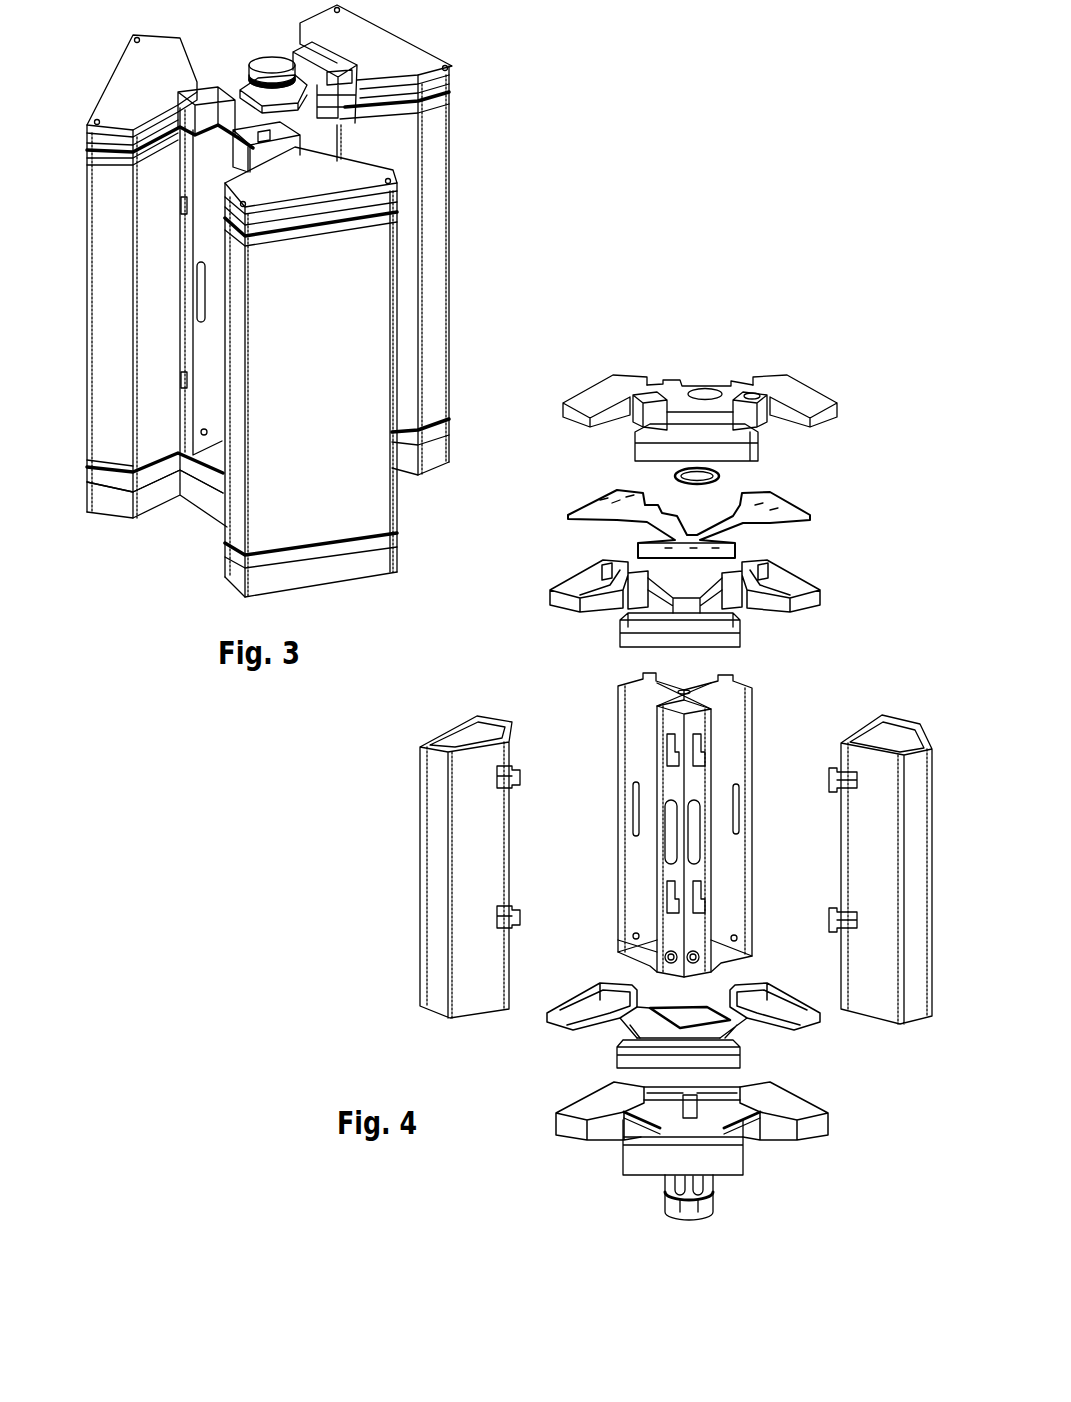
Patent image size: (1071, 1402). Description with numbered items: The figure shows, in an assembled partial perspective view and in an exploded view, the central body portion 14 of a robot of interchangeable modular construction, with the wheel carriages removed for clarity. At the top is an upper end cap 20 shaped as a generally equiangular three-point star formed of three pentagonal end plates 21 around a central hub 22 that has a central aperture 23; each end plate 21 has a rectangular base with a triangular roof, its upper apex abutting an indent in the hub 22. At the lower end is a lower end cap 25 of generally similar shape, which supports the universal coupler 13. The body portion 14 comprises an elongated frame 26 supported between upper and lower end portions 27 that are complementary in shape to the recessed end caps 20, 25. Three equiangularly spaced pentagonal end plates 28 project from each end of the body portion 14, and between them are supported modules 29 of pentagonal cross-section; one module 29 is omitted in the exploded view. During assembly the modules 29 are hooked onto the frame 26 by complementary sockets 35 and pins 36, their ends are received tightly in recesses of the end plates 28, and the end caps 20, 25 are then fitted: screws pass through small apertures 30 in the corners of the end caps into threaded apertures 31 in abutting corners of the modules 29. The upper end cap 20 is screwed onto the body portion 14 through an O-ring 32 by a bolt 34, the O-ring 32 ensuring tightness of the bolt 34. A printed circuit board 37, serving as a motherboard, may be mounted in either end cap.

In FIG. 4, the universal coupler 13 is at (695, 1206).
In FIG. 3, the central body portion 14 is at (186, 509).
In FIG. 4, the central body portion 14 is at (762, 827).
In FIG. 3, the upper end cap 20 is at (407, 43).
In FIG. 4, the upper end cap 20 is at (813, 382).
In FIG. 4, the end plate 21 is at (627, 380).
In FIG. 4, the central hub 22 is at (760, 415).
In FIG. 4, the central aperture 23 is at (705, 387).
In FIG. 3, the lower end cap 25 is at (445, 446).
In FIG. 4, the lower end cap 25 is at (820, 1113).
In FIG. 4, the elongated frame 26 is at (617, 768).
In FIG. 4, the end portion 27 is at (690, 667).
In FIG. 4, the pentagonal end plate 28 is at (552, 592).
In FIG. 3, the module 29 is at (440, 190).
In FIG. 4, the module 29 is at (486, 933).
In FIG. 4, the small aperture 30 is at (782, 373).
In FIG. 4, the threaded aperture 31 is at (428, 740).
In FIG. 4, the O-ring 32 is at (722, 475).
In FIG. 3, the bolt 34 is at (272, 62).
In FIG. 4, the socket 35 is at (702, 745).
In FIG. 4, the pin 36 is at (515, 762).
In FIG. 4, the printed circuit board 37 is at (810, 513).